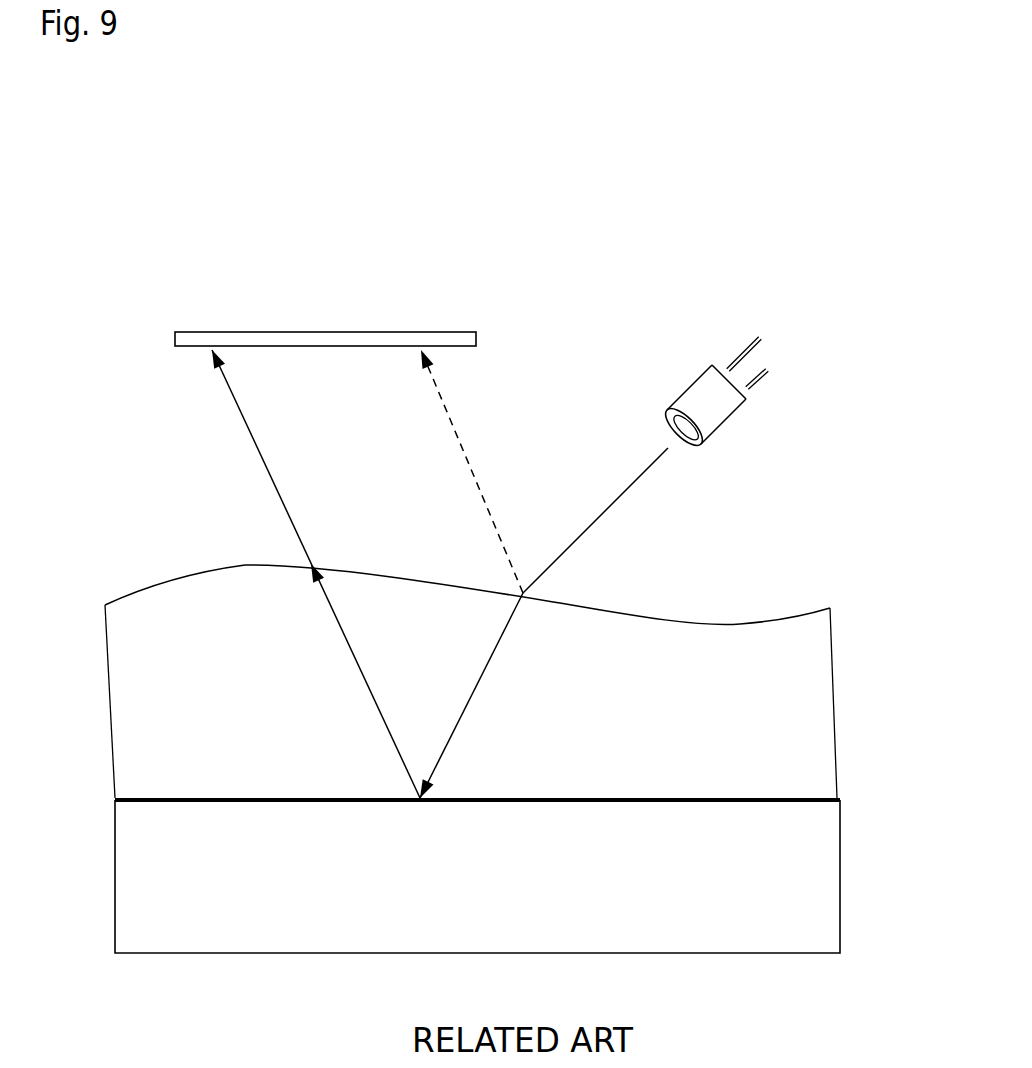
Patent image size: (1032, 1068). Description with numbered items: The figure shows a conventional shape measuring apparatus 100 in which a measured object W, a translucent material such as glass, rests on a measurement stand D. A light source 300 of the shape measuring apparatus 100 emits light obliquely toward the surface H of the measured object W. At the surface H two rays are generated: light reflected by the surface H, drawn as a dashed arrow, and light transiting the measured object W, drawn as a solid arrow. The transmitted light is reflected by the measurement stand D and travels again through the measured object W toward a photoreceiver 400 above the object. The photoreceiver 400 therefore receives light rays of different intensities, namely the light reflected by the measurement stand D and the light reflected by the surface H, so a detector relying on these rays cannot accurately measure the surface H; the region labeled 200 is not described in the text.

The shape measuring apparatus 100 is at (495, 452).
The optical detection system 200 is at (580, 253).
The light source 300 is at (723, 415).
The photoreceiver 400 is at (465, 348).
The surface H is at (160, 578).
The measured object W is at (773, 608).
The measurement stand D is at (828, 893).